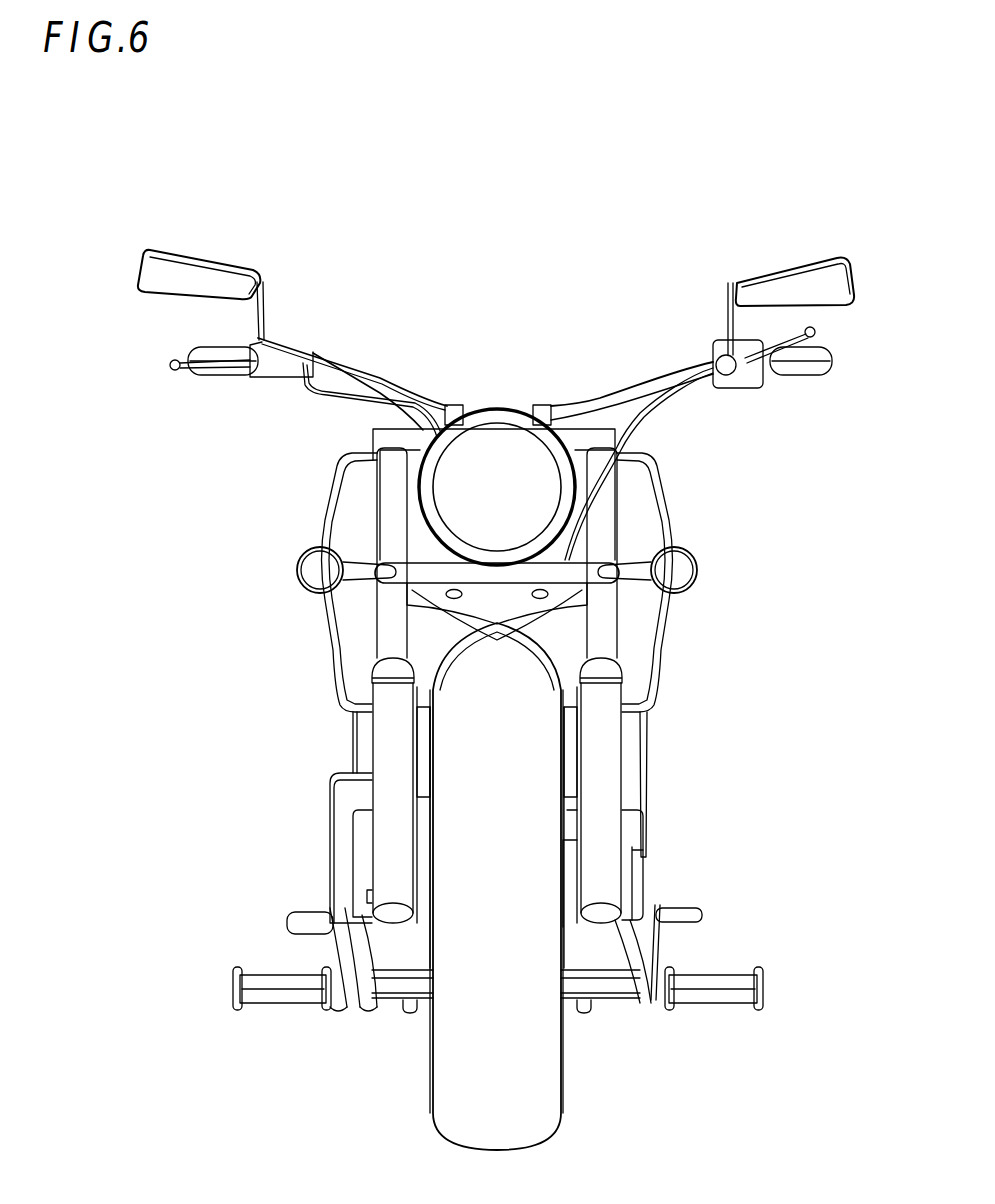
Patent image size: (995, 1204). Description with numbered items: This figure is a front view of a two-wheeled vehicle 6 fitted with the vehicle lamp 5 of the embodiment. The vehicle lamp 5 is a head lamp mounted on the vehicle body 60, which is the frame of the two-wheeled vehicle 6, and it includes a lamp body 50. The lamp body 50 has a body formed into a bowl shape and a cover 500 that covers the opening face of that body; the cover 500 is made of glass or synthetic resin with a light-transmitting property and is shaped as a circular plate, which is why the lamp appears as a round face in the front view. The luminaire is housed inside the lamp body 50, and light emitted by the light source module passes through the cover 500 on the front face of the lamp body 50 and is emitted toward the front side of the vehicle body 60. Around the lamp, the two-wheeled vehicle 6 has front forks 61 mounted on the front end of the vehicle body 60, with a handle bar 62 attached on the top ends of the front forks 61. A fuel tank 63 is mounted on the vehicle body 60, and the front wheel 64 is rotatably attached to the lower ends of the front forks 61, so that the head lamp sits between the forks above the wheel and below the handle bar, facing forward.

The vehicle lamp 5 is at (512, 410).
The lamp body 50 is at (482, 407).
The cover 500 is at (515, 487).
The two-wheeled vehicle 6 is at (766, 245).
The vehicle body 60 is at (372, 593).
The front forks 61 is at (390, 633).
The handle bar 62 is at (595, 407).
The fuel tank 63 is at (343, 511).
The wheel (front wheel) 64 is at (525, 1080).